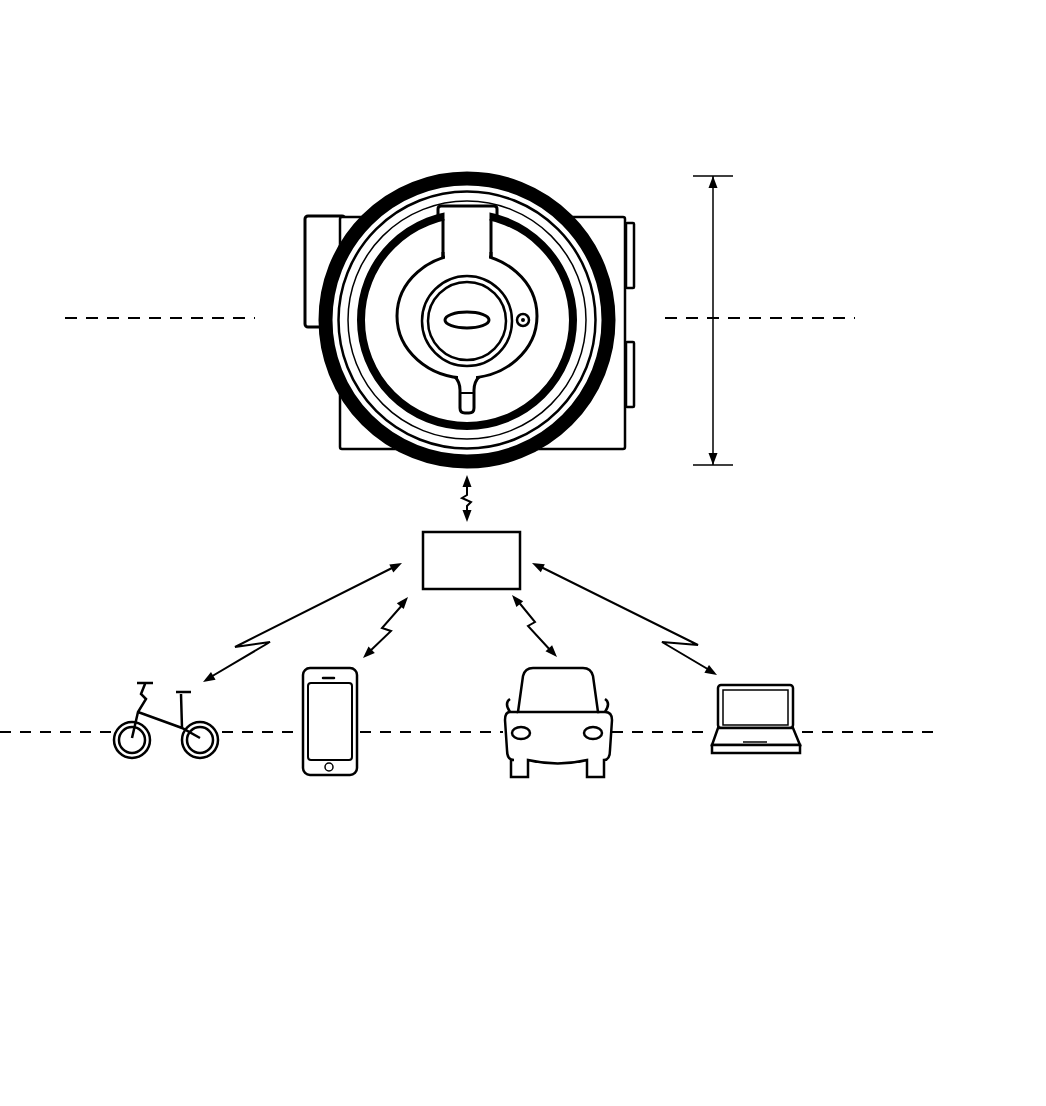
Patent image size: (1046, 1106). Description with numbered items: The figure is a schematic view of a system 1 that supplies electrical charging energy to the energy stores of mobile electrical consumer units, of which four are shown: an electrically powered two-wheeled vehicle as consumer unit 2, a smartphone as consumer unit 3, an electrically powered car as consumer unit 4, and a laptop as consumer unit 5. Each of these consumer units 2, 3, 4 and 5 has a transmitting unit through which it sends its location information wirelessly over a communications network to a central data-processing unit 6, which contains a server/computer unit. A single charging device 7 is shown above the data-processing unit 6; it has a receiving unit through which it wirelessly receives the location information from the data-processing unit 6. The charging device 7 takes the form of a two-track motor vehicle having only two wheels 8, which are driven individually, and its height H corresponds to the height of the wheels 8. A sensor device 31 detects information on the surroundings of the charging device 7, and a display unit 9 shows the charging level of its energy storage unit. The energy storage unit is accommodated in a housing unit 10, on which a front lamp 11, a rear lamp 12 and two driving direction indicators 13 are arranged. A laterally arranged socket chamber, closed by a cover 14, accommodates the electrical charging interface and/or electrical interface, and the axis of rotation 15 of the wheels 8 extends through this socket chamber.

The system 1 is at (690, 96).
The consumer unit 2 is at (160, 710).
The consumer unit 3 is at (338, 777).
The consumer unit 4 is at (568, 760).
The consumer unit 5 is at (758, 753).
The central data-processing unit 6 is at (502, 550).
The charging device 7 is at (588, 200).
The wheel 8 is at (485, 173).
The display unit 9 is at (634, 230).
The housing unit 10 is at (613, 217).
The front lamp 11 is at (634, 388).
The rear lamp 12 is at (305, 220).
The driving direction indicator 13 is at (457, 400).
The cover 14 is at (450, 337).
The axis of rotation 15 is at (462, 318).
The sensor device 31 is at (520, 312).
The height H is at (714, 255).